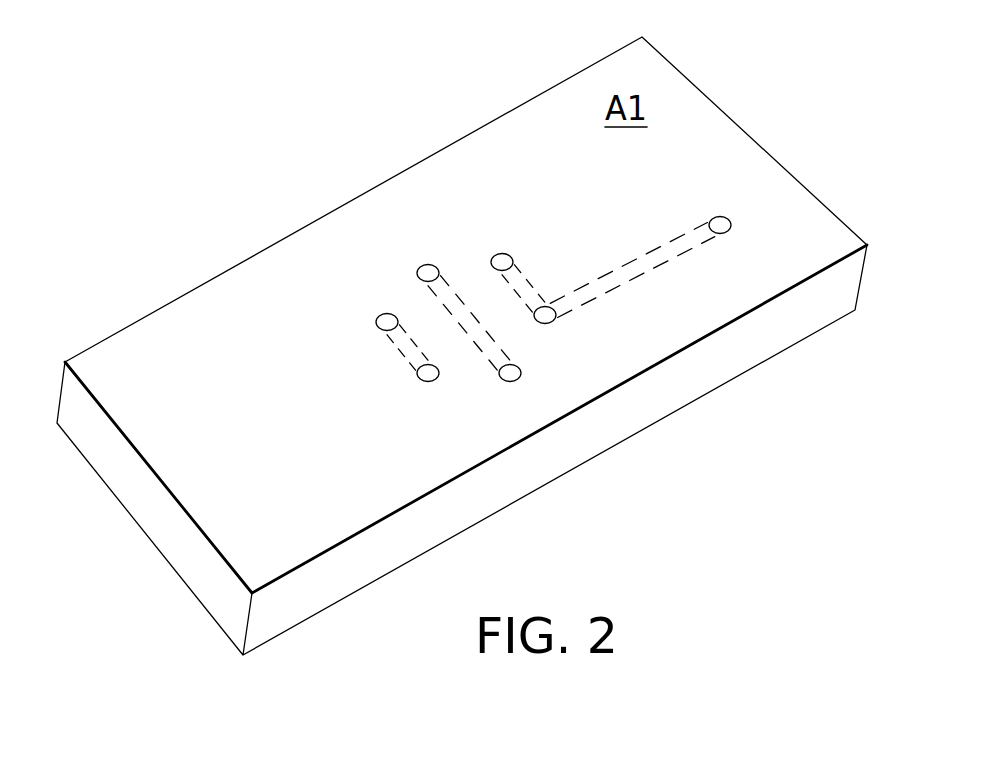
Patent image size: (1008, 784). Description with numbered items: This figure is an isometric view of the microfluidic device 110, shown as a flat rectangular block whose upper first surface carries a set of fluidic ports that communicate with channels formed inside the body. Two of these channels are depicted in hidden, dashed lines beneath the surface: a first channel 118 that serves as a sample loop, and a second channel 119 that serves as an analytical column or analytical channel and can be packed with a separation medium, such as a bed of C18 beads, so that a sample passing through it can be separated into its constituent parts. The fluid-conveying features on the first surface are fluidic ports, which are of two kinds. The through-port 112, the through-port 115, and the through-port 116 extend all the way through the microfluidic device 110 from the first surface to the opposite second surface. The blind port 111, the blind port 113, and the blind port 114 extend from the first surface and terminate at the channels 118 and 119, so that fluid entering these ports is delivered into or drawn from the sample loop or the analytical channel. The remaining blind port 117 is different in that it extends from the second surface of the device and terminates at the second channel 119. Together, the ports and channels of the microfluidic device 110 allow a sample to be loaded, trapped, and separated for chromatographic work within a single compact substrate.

The microfluidic device 110 is at (437, 153).
The blind port 111 is at (426, 263).
The through-port 112 is at (503, 253).
The blind port 113 is at (553, 322).
The blind port 114 is at (511, 383).
The through-port 115 is at (432, 383).
The through-port 116 is at (380, 315).
The blind port 117 is at (722, 215).
The first channel 118 is at (442, 316).
The second channel 119 is at (640, 260).